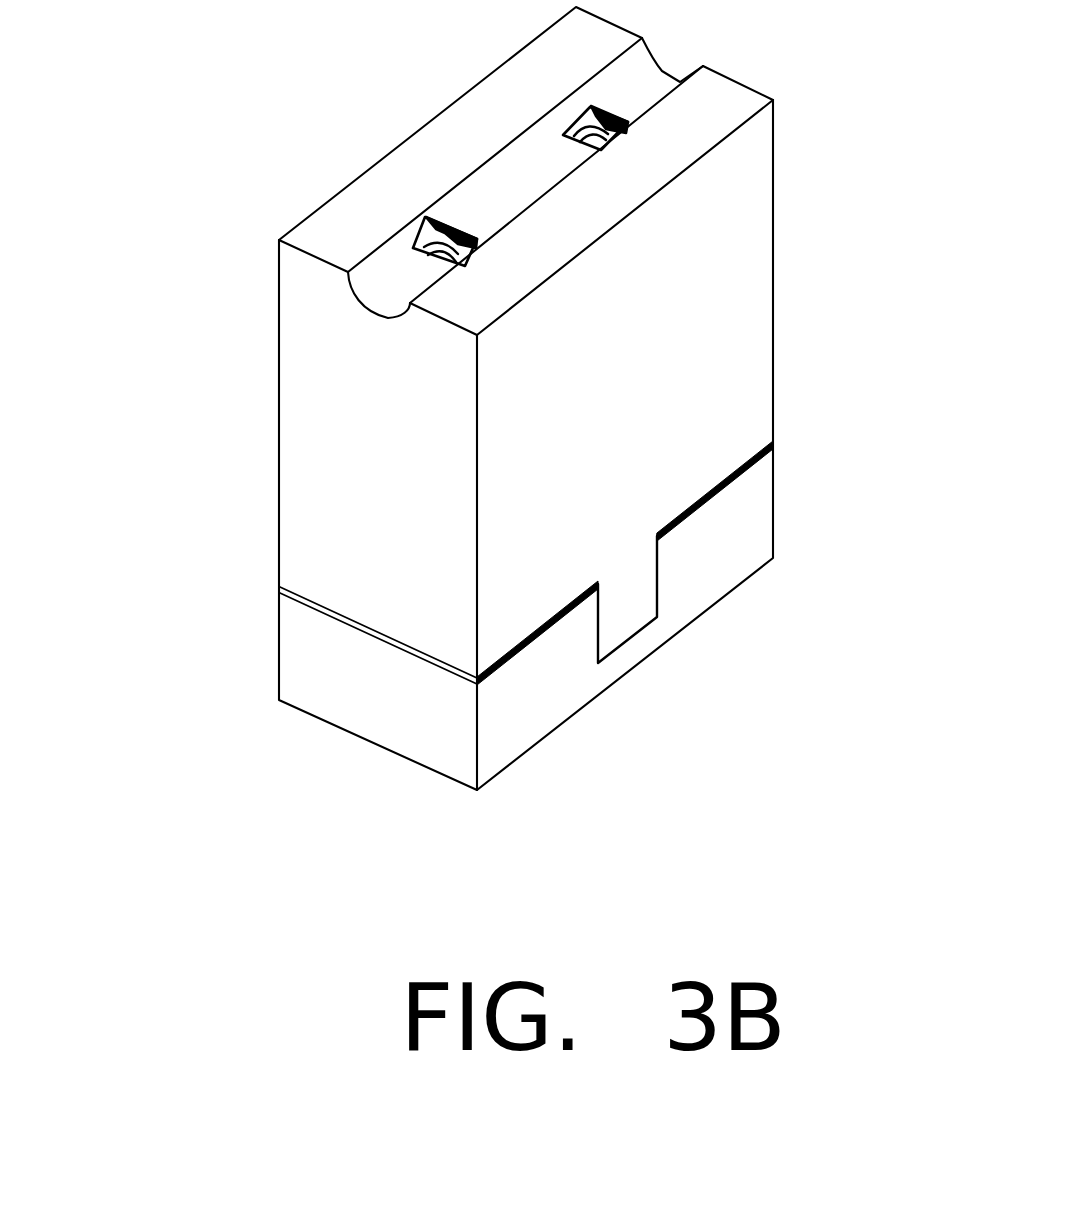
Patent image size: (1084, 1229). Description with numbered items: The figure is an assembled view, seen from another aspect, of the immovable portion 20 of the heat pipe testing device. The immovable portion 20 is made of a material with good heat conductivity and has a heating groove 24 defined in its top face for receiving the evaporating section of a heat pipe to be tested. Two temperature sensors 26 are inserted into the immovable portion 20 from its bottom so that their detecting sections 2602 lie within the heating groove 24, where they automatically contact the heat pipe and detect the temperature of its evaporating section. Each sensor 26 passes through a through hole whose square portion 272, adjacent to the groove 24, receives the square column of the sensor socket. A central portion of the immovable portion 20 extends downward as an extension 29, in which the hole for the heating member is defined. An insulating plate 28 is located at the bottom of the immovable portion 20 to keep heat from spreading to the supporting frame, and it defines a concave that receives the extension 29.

The immovable portion 20 is at (718, 288).
The heating groove 24 is at (650, 81).
The temperature sensor 26 is at (258, 196).
The detecting section 2602 is at (418, 218).
The square portion 272 is at (553, 122).
The insulating plate 28 is at (727, 505).
The extension 29 is at (620, 597).